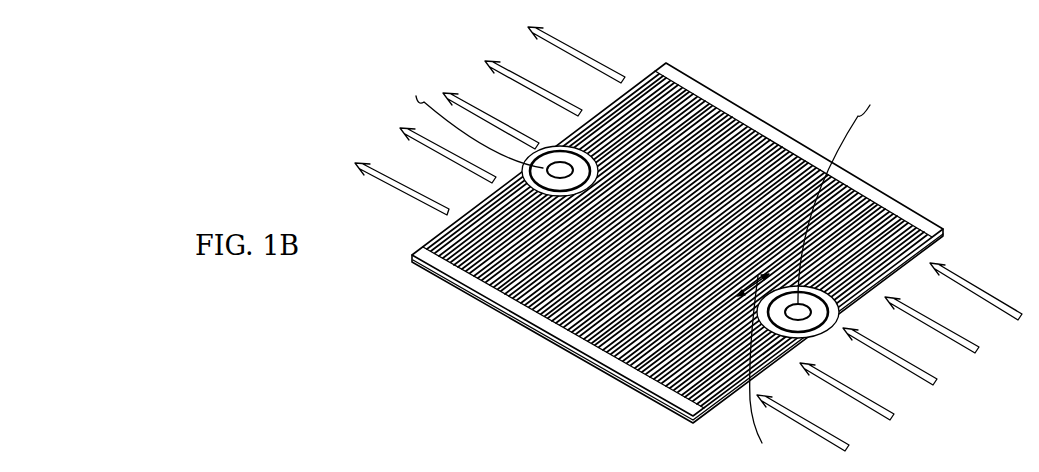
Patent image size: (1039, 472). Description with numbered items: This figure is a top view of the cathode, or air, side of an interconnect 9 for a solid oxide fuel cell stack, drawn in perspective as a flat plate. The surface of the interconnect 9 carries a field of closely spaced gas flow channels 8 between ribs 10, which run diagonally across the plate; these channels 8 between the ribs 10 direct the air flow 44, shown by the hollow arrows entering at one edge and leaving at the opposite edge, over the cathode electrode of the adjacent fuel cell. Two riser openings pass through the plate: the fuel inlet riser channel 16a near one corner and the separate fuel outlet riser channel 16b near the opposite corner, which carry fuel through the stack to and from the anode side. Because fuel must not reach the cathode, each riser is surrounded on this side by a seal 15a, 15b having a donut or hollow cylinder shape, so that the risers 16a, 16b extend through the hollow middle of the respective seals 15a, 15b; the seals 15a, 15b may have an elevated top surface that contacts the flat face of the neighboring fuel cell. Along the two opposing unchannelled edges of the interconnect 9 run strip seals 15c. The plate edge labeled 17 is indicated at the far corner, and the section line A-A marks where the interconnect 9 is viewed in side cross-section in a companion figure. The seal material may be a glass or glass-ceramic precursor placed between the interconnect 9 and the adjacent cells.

The gas flow channels 8 is at (705, 115).
The interconnect 9 is at (709, 224).
The ribs 10 is at (735, 132).
The seal 15a is at (580, 168).
The seal 15b is at (821, 313).
The strip seals 15c is at (857, 184).
The fuel inlet riser channel 16a is at (465, 121).
The fuel outlet riser channel 16b is at (847, 193).
The plate edge 17 is at (942, 243).
The air flow 44 is at (597, 60).